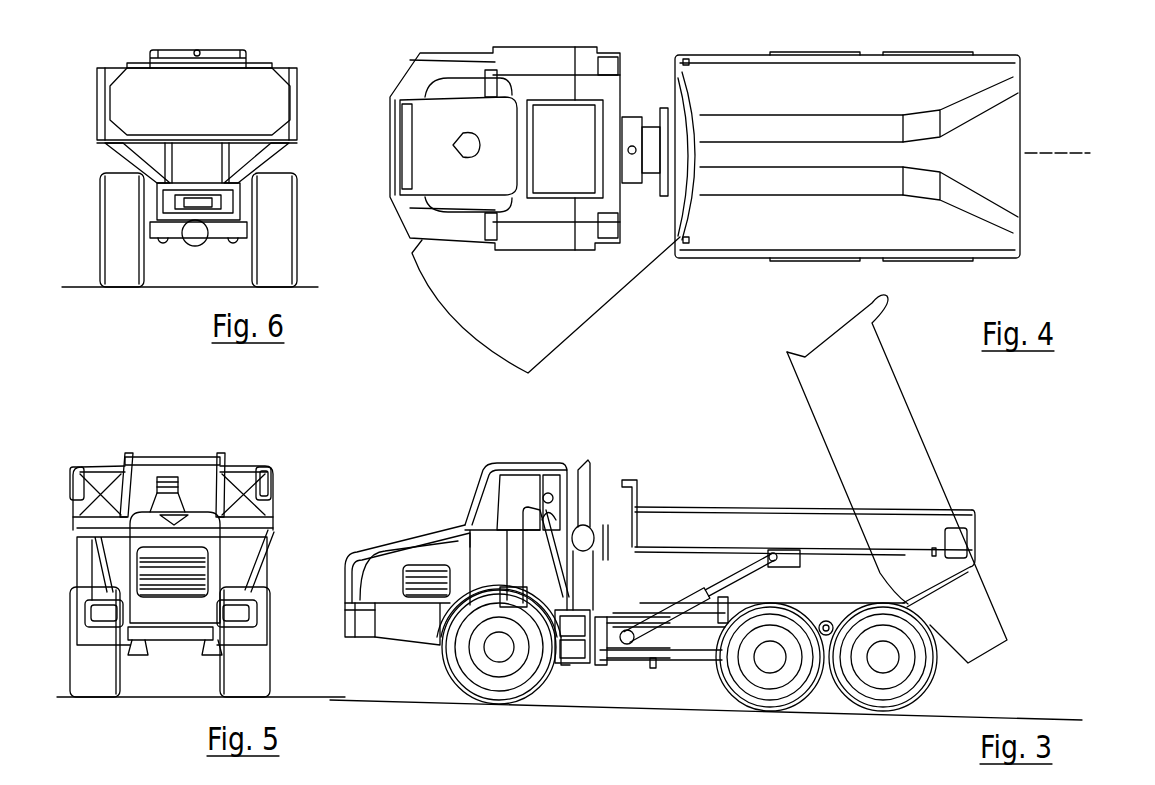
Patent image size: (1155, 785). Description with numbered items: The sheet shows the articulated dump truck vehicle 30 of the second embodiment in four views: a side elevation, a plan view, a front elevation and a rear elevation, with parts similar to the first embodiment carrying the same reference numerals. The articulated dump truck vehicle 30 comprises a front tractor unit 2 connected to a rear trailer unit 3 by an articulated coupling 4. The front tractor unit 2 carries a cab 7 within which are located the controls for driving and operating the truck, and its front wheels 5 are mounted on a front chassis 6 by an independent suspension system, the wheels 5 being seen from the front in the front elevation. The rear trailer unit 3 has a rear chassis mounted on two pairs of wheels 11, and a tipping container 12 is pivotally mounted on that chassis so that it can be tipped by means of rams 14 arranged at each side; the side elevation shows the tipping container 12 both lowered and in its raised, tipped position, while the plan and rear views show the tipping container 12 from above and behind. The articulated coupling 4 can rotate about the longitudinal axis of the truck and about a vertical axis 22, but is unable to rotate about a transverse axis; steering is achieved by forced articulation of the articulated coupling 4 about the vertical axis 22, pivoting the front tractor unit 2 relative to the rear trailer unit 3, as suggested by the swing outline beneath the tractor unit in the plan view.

In FIG. 3, the front tractor unit 2 is at (485, 560).
In FIG. 3, the rear trailer unit 3 is at (819, 528).
In FIG. 4, the articulated coupling 4 is at (633, 200).
In FIG. 3, the articulated coupling 4 is at (603, 667).
In FIG. 5, the wheels 5 is at (105, 666).
In FIG. 3, the wheels 5 is at (461, 667).
In FIG. 3, the front chassis 6 is at (383, 638).
In FIG. 5, the cab 7 is at (197, 478).
In FIG. 3, the cab 7 is at (540, 462).
In FIG. 6, the wheels 11 is at (128, 233).
In FIG. 3, the wheels 11 is at (770, 680).
In FIG. 4, the tipping container 12 is at (945, 77).
In FIG. 3, the tipping container 12 is at (925, 527).
In FIG. 6, the rams 14 is at (130, 167).
In FIG. 5, the rams 14 is at (256, 551).
In FIG. 3, the rams 14 is at (727, 580).
In FIG. 3, the vertical axis 22 is at (594, 612).
In FIG. 6, the articulated dump truck vehicle 30 is at (218, 151).
In FIG. 4, the articulated dump truck vehicle 30 is at (752, 196).
In FIG. 5, the articulated dump truck vehicle 30 is at (186, 546).
In FIG. 3, the articulated dump truck vehicle 30 is at (706, 528).